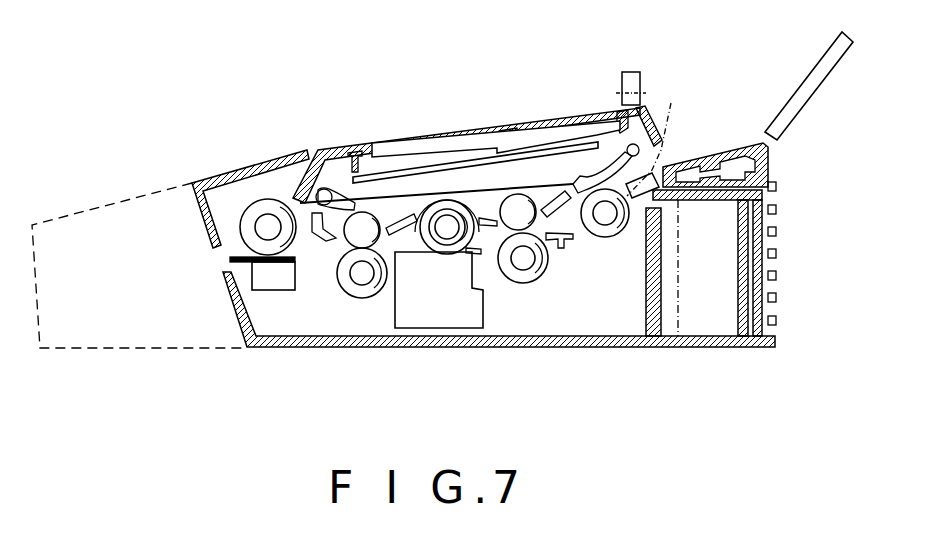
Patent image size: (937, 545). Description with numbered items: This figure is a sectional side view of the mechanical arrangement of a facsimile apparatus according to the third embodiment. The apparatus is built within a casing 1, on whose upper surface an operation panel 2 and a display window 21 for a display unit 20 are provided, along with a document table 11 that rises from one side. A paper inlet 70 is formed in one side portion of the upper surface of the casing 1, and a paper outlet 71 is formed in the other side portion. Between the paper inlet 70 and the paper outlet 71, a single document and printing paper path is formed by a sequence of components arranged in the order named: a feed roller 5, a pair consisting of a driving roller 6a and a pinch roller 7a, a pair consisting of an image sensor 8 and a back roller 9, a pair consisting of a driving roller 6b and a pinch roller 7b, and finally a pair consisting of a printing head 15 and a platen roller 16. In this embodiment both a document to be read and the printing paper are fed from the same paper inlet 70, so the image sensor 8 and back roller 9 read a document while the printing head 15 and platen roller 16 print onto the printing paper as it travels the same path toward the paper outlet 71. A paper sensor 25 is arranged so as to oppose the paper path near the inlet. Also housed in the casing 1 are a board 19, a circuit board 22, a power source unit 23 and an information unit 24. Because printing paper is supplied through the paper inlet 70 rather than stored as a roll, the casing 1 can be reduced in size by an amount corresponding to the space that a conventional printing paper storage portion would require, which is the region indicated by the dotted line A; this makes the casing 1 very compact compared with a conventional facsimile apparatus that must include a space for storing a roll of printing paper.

The casing 1 is at (522, 348).
The operation panel 2 is at (341, 149).
The feed roller 5 is at (598, 236).
The driving roller 6a is at (527, 282).
The driving roller 6b is at (345, 294).
The pinch roller 7a is at (520, 194).
The pinch roller 7b is at (352, 238).
The image sensor 8 is at (430, 322).
The back roller 9 is at (457, 252).
The document table 11 is at (806, 72).
The printing head 15 is at (272, 290).
The platen roller 16 is at (268, 216).
The board 19 is at (561, 143).
The display unit 20 is at (455, 162).
The display window 21 is at (402, 140).
The circuit board 22 is at (645, 303).
The power source unit 23 is at (723, 292).
The information unit 24 is at (632, 70).
The paper sensor 25 is at (656, 140).
The paper inlet 70 is at (677, 162).
The paper outlet 71 is at (217, 252).
The printing paper storage portion A is at (88, 349).